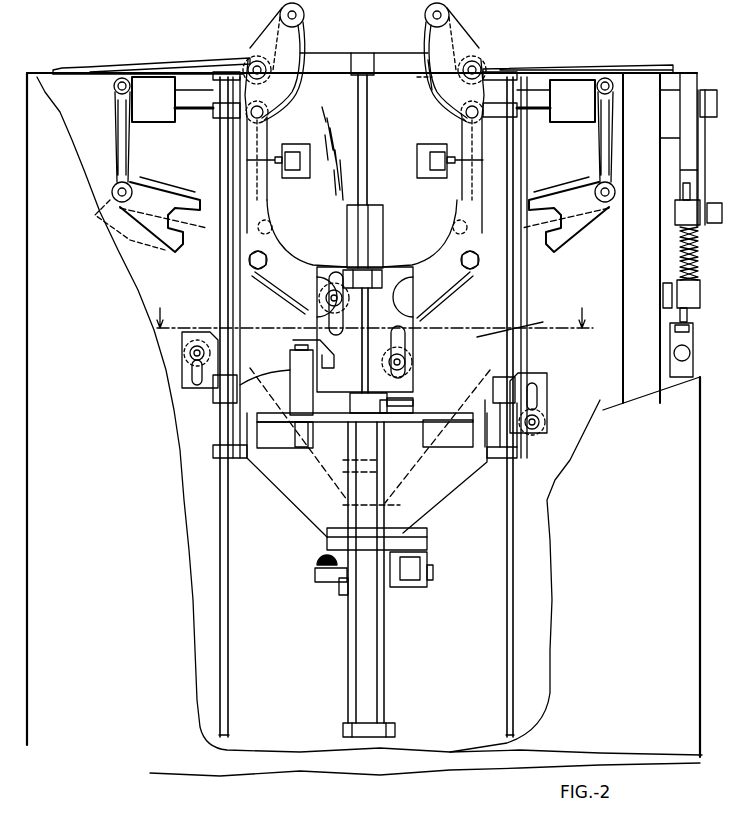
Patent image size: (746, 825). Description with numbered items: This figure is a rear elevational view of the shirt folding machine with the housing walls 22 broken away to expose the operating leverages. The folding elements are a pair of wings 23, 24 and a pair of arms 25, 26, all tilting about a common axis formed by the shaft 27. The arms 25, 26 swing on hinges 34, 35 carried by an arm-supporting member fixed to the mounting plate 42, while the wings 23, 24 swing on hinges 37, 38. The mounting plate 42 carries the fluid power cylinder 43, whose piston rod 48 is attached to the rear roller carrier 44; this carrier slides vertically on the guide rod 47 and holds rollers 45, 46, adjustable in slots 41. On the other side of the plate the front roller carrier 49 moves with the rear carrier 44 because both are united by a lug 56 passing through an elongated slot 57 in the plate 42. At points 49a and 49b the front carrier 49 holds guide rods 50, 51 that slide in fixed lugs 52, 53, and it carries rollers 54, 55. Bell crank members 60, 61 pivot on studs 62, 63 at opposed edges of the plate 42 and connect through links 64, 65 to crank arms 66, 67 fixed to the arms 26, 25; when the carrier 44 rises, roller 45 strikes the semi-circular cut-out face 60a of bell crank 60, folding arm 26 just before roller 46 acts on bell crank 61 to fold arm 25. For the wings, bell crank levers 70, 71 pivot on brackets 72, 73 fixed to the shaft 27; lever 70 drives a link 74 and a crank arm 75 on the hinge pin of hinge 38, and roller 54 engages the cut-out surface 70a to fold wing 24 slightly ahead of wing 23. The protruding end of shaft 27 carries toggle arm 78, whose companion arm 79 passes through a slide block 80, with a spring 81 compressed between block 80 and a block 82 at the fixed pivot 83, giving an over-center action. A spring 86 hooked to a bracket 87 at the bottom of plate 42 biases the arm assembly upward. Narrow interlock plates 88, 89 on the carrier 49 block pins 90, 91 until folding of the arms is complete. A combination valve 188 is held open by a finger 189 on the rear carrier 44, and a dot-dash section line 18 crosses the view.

The housing walls 22 is at (702, 568).
The wing 23 is at (512, 71).
The wing 24 is at (172, 66).
The folding arm 25 is at (550, 66).
The folding arm 26 is at (107, 67).
The shaft 27 is at (550, 105).
The hinge 34 is at (488, 66).
The hinge 35 is at (243, 62).
The hinge 37 is at (411, 74).
The hinge 38 is at (302, 55).
The slots 41 is at (312, 289).
The mounting plate 42 is at (403, 60).
The fluid power cylinder 43 is at (385, 676).
The rear roller carrier 44 is at (445, 296).
The roller 45 is at (345, 300).
The roller 46 is at (405, 357).
The guide rod 47 is at (368, 150).
The piston rod 48 is at (365, 328).
The front roller carrier 49 is at (205, 388).
The attachment point 49a is at (265, 364).
The attachment point 49b is at (533, 375).
The guide rod 50 is at (228, 520).
The guide rod 51 is at (506, 556).
The fixed lugs 52 is at (215, 116).
The fixed lugs 53 is at (510, 118).
The roller 54 is at (197, 345).
The roller 55 is at (527, 433).
The lug 56 is at (350, 462).
The elongated slot 57 is at (383, 224).
The bell crank member 60 is at (290, 261).
The semi-circular cut-out face 60a is at (280, 298).
The bell crank member 61 is at (430, 261).
The pivot stud 62 is at (258, 270).
The pivot stud 63 is at (463, 266).
The link 64 is at (296, 82).
The link 65 is at (443, 82).
The crank arm 66 is at (257, 61).
The crank arm 67 is at (472, 61).
The bell crank lever 70 is at (200, 200).
The cut-out surface 70a is at (185, 232).
The bell crank lever 71 is at (538, 200).
The bracket 72 is at (130, 155).
The bracket 73 is at (597, 136).
The link 74 is at (262, 196).
The crank arm 75 is at (276, 112).
The toggle arm 78 is at (708, 139).
The toggle arm 79 is at (700, 258).
The slide block 80 is at (692, 212).
The spring 81 is at (700, 272).
The block 82 is at (700, 300).
The fixed pivot point 83 is at (672, 298).
The spring 86 is at (315, 562).
The bracket 87 is at (343, 588).
The narrow plate 88 is at (234, 276).
The narrow plate 89 is at (527, 290).
The pin 90 is at (262, 134).
The pin 91 is at (455, 131).
The section line 18 is at (374, 306).
The combination valve 188 is at (290, 395).
The finger 189 is at (293, 340).